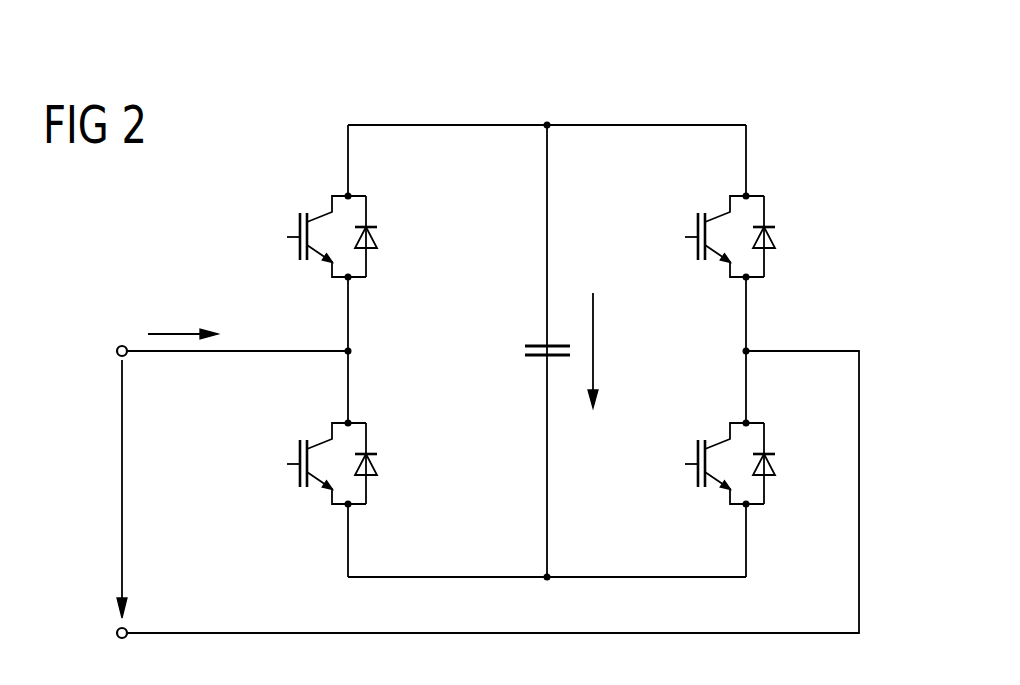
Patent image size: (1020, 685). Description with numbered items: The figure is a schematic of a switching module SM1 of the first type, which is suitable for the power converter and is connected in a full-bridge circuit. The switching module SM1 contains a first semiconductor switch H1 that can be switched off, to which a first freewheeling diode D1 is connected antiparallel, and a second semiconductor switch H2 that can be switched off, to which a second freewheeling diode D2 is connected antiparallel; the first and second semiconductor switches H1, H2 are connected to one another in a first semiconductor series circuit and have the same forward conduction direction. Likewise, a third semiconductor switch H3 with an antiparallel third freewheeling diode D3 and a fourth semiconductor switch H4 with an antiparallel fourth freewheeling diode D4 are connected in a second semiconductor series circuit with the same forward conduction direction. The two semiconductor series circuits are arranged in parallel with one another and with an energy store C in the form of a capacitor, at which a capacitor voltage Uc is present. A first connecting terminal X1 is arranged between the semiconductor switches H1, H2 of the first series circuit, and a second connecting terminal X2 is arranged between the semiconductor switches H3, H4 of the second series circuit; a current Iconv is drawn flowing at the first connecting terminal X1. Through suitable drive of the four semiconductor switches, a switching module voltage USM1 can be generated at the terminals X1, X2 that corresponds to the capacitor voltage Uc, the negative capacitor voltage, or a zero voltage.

The switching module of the first type SM1 is at (800, 90).
The first semiconductor switch H1 is at (287, 234).
The second semiconductor switch H2 is at (287, 461).
The third semiconductor switch H3 is at (685, 234).
The fourth semiconductor switch H4 is at (685, 461).
The first freewheeling diode D1 is at (378, 233).
The second freewheeling diode D2 is at (378, 460).
The third freewheeling diode D3 is at (776, 233).
The fourth freewheeling diode D4 is at (776, 460).
The energy store C is at (524, 350).
The capacitor voltage Uc is at (609, 350).
The converter current Iconv is at (183, 317).
The switching module voltage USM1 is at (86, 489).
The first connecting terminal X1 is at (116, 351).
The second connecting terminal X2 is at (116, 633).